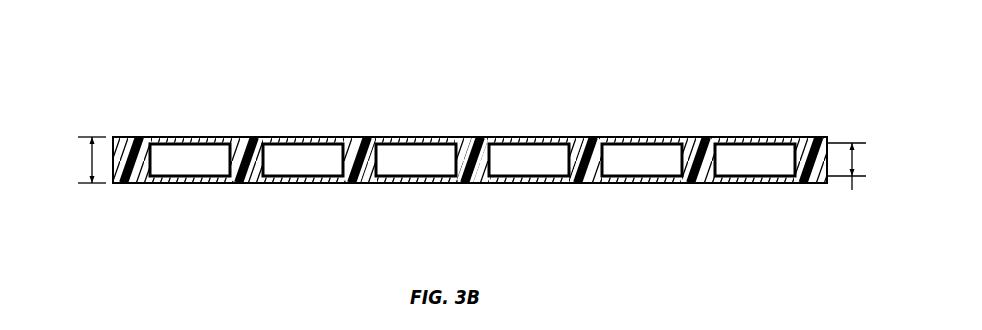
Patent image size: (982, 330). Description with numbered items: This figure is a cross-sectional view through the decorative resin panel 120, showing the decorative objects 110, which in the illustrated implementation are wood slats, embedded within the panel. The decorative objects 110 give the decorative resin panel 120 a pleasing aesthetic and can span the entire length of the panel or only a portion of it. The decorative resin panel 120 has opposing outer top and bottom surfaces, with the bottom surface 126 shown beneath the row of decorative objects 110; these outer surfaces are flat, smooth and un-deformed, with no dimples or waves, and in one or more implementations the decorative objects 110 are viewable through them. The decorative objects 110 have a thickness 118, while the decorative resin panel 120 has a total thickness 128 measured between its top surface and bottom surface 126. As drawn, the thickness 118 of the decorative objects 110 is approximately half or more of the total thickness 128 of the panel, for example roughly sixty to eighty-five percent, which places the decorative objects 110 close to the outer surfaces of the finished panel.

The decorative objects 110 is at (192, 152).
The thickness of the decorative objects 118 is at (852, 190).
The decorative resin panel 120 is at (752, 90).
The bottom surface 126 is at (718, 184).
The thickness of the decorative resin panel 128 is at (92, 153).